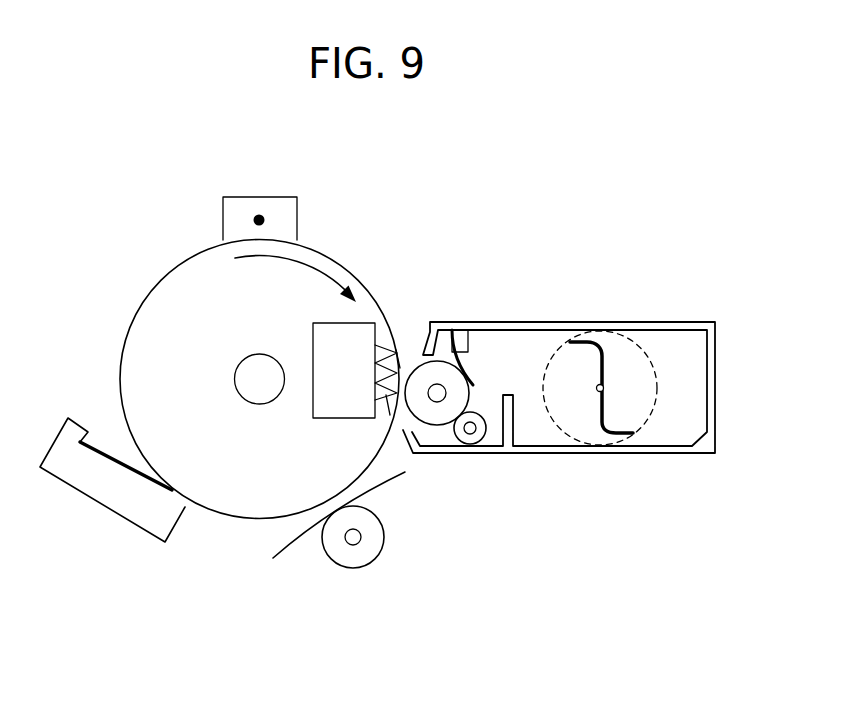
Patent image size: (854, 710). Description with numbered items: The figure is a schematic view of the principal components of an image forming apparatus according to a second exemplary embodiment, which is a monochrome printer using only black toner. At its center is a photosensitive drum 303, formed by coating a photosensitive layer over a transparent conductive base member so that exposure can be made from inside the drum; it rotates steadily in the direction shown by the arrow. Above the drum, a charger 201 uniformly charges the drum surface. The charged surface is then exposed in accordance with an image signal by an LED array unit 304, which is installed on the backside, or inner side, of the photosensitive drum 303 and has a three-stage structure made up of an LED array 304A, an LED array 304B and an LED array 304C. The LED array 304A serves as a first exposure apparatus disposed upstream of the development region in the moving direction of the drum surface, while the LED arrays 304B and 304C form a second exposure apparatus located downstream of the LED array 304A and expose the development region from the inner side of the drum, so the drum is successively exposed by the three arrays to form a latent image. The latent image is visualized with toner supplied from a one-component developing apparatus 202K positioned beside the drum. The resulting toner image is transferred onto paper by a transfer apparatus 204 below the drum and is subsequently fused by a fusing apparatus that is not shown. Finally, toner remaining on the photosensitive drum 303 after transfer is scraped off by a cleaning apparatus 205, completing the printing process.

The charger 201 is at (250, 210).
The photosensitive drum 303 is at (233, 503).
The LED array unit 304 is at (360, 337).
The LED array 304A is at (388, 347).
The LED array 304B is at (398, 365).
The LED array 304C is at (389, 410).
The one-component developing apparatus 202K is at (673, 437).
The transfer apparatus 204 is at (373, 547).
The cleaning apparatus 205 is at (127, 493).